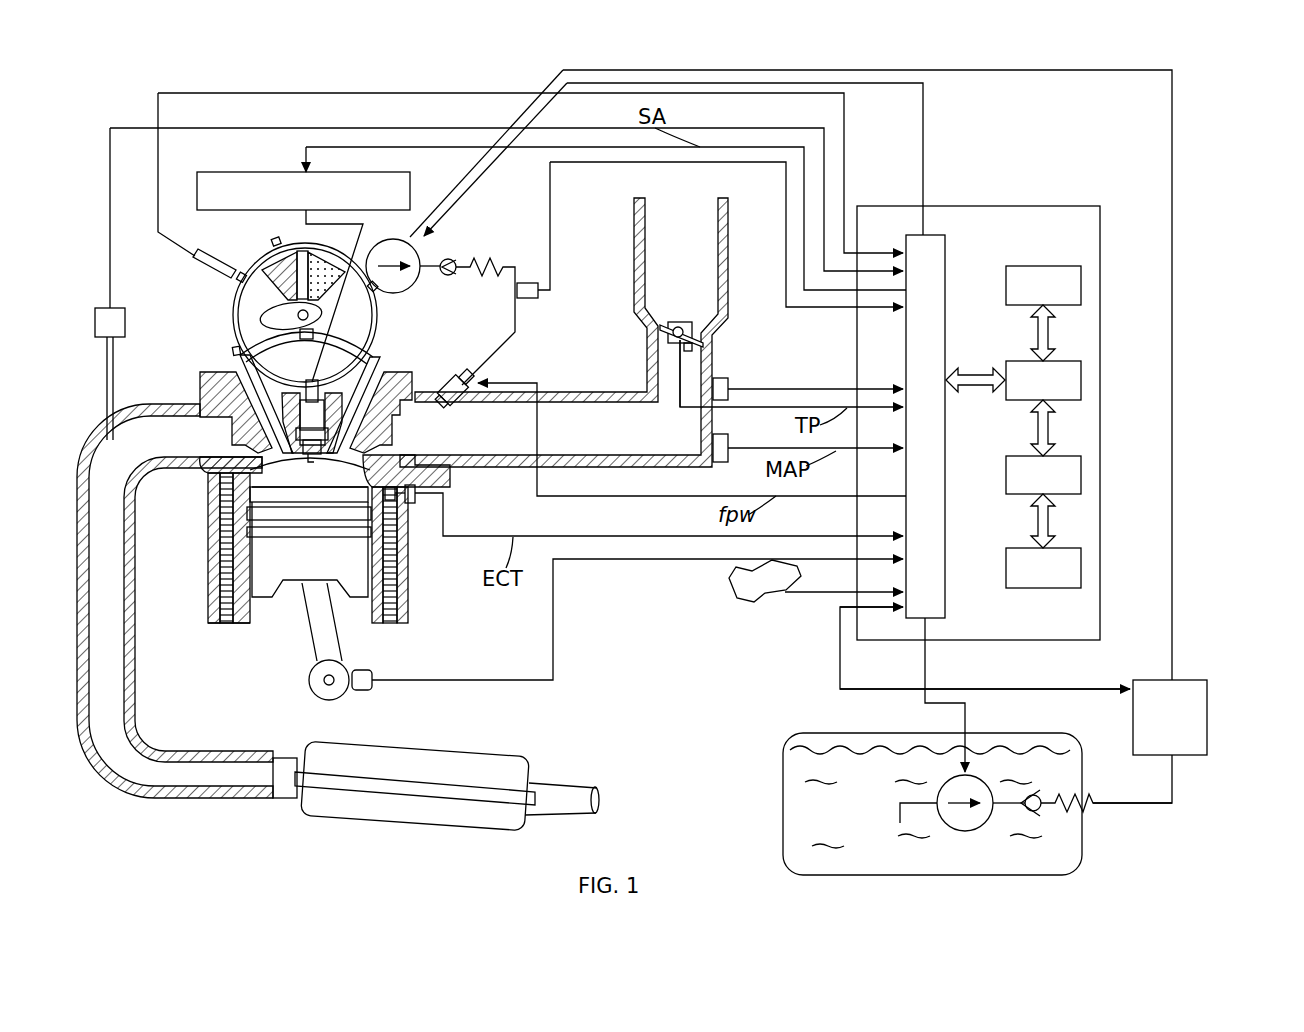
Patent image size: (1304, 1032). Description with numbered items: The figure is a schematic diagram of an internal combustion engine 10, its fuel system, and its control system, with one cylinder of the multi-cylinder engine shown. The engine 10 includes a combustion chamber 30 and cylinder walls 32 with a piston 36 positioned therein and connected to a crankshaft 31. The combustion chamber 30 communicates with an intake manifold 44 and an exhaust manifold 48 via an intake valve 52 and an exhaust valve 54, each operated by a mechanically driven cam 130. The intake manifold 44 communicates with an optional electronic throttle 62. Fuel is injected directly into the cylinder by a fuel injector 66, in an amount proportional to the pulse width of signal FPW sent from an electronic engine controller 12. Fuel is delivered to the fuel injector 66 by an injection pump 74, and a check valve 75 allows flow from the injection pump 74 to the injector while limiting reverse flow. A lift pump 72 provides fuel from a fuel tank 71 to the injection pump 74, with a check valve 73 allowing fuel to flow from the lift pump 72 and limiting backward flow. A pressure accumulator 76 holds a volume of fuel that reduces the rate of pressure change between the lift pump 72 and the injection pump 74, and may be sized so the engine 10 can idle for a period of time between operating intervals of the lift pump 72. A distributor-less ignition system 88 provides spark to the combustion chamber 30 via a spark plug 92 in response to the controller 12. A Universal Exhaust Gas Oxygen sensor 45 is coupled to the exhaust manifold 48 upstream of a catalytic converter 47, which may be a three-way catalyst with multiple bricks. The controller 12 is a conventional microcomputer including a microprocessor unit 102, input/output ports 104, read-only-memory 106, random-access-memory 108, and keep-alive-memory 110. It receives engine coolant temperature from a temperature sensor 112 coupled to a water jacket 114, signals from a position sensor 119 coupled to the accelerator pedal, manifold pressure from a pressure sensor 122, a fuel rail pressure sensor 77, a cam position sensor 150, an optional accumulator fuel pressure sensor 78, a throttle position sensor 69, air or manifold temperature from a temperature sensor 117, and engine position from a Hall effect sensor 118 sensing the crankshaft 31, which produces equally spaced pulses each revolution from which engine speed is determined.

The internal combustion engine 10 is at (198, 393).
The electronic engine controller 12 is at (975, 206).
The combustion chamber 30 is at (226, 490).
The crankshaft 31 is at (308, 682).
The cylinder walls 32 is at (245, 626).
The piston 36 is at (315, 574).
The intake manifold 44 is at (564, 332).
The Universal Exhaust Gas Oxygen (UEGO) sensor 45 is at (93, 323).
The catalytic converter 47 is at (396, 745).
The exhaust manifold 48 is at (86, 472).
The intake valve 52 is at (398, 372).
The exhaust valve 54 is at (240, 370).
The electronic throttle 62 is at (662, 320).
The fuel injector 66 is at (462, 401).
The throttle position sensor 69 is at (684, 355).
The fuel tank 71 is at (781, 812).
The lift pump 72 is at (975, 830).
The check valve 73 is at (1035, 813).
The injection pump 74 is at (402, 290).
The check valve 75 is at (449, 277).
The pressure accumulator 76 is at (1212, 700).
The fuel rail pressure sensor 77 is at (524, 300).
The accumulator fuel pressure sensor 78 is at (1133, 686).
The distributor-less ignition system 88 is at (240, 172).
The spark plug 92 is at (311, 384).
The microprocessor unit 102 is at (1006, 361).
The input/output ports 104 is at (946, 260).
The read-only-memory 106 is at (1036, 266).
The random-access-memory 108 is at (1006, 456).
The keep-alive-memory 110 is at (1006, 548).
The temperature sensor 112 is at (418, 492).
The water jacket 114 is at (210, 626).
The temperature sensor 117 is at (731, 384).
The Hall effect sensor 118 is at (373, 673).
The position sensor 119 is at (794, 608).
The pressure sensor 122 is at (729, 444).
The cam 130 is at (276, 316).
The cam position sensor 150 is at (196, 266).